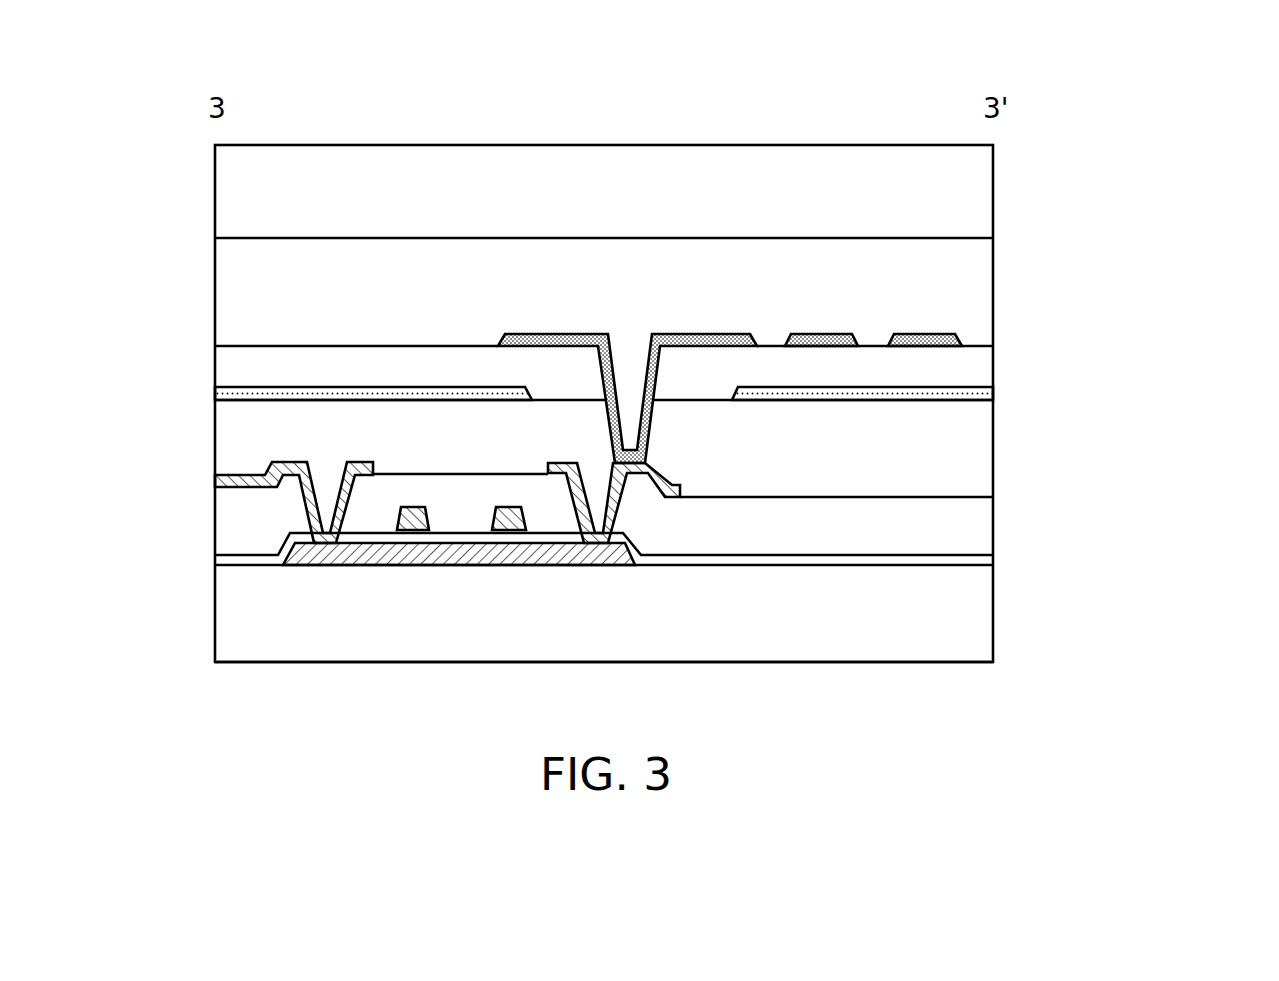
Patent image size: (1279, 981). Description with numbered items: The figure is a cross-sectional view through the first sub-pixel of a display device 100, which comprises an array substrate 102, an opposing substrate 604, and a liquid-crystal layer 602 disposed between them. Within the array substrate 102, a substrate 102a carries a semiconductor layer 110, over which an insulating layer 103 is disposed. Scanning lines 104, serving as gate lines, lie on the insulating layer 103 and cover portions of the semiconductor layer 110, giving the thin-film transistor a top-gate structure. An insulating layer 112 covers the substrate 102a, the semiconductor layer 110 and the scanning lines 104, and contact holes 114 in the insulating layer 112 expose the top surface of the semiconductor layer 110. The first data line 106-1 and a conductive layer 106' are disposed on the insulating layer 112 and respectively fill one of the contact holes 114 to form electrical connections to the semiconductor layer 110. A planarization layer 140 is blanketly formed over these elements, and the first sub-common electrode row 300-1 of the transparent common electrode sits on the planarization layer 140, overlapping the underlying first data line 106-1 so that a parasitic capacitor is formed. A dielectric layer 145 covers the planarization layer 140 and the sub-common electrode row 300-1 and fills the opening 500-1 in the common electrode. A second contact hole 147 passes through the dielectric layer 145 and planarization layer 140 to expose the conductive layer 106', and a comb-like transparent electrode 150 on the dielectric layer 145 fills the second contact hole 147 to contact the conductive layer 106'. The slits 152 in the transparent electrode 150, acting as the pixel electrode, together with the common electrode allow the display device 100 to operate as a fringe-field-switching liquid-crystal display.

The display device 100 is at (1052, 106).
The opposing substrate 604 is at (978, 192).
The liquid-crystal layer 602 is at (978, 262).
The transparent electrode 150 is at (958, 338).
The slits 152 is at (772, 334).
The second contact hole 147 is at (632, 426).
The opening 500-1 is at (564, 388).
The dielectric layer 145 is at (978, 363).
The first sub-common electrode row 300-1 is at (978, 395).
The planarization layer 140 is at (978, 447).
The insulating layer 112 is at (978, 525).
The insulating layer 103 is at (978, 560).
The substrate 102a is at (975, 617).
The array substrate 102 is at (1156, 302).
The semiconductor layer 110 is at (348, 557).
The scanning line 104 is at (418, 532).
The first data line 106-1 is at (216, 481).
The conductive layer 106' is at (614, 591).
The first contact holes 114 is at (327, 505).